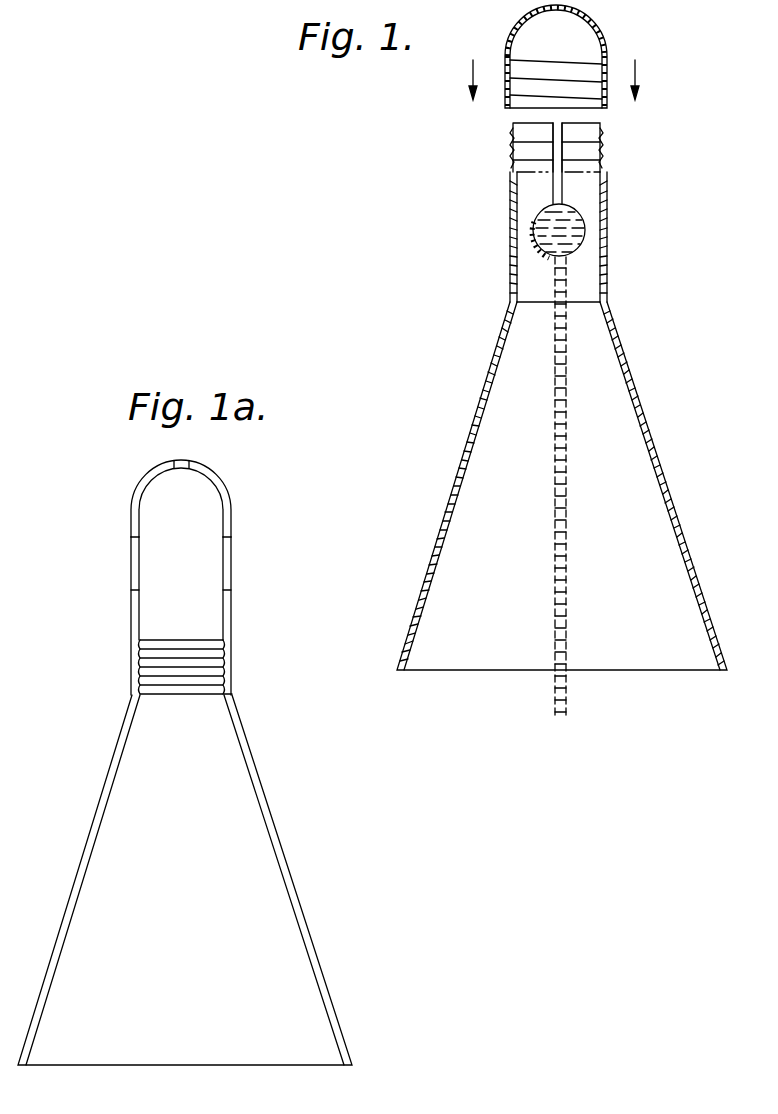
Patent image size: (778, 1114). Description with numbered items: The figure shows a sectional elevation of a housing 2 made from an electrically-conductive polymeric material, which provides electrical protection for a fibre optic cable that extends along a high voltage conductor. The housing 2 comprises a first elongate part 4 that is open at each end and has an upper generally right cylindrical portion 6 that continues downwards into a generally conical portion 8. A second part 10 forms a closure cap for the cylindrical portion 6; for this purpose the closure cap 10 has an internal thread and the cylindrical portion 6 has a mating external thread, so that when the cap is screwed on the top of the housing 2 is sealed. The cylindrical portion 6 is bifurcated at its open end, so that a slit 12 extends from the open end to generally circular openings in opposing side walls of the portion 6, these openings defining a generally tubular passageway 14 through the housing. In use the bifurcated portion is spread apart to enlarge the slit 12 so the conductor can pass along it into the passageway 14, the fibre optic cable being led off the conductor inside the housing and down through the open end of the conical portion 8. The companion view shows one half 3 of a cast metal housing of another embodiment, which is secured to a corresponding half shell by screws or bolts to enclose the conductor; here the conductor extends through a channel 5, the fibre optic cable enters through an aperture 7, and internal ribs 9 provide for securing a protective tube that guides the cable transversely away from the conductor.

In FIG. 1, the housing 2 is at (547, 420).
In FIG. 1A, the half shell 3 is at (185, 757).
In FIG. 1, the first elongate part 4 is at (650, 432).
In FIG. 1A, the channel 5 is at (168, 606).
In FIG. 1, the upper generally right cylindrical portion 6 is at (600, 153).
In FIG. 1A, the aperture 7 is at (186, 462).
In FIG. 1, the generally conical portion 8 is at (495, 432).
In FIG. 1A, the internal ribs 9 is at (180, 672).
In FIG. 1, the second part 10 is at (597, 32).
In FIG. 1, the slit 12 is at (555, 152).
In FIG. 1, the tubular passageway 14 is at (567, 232).